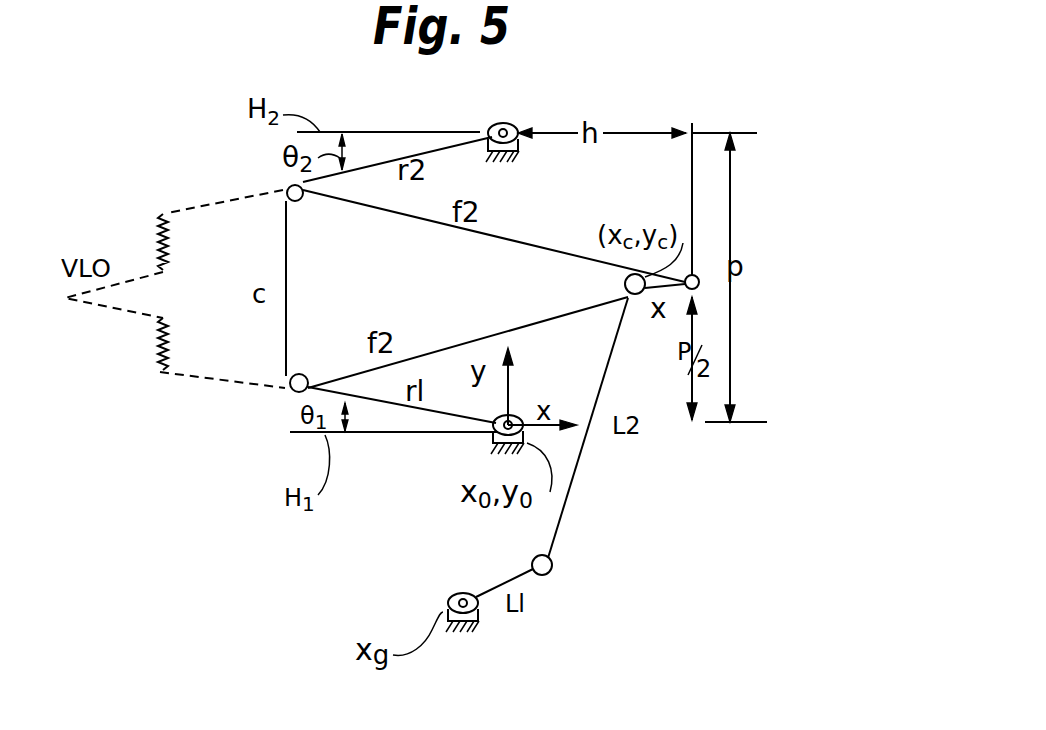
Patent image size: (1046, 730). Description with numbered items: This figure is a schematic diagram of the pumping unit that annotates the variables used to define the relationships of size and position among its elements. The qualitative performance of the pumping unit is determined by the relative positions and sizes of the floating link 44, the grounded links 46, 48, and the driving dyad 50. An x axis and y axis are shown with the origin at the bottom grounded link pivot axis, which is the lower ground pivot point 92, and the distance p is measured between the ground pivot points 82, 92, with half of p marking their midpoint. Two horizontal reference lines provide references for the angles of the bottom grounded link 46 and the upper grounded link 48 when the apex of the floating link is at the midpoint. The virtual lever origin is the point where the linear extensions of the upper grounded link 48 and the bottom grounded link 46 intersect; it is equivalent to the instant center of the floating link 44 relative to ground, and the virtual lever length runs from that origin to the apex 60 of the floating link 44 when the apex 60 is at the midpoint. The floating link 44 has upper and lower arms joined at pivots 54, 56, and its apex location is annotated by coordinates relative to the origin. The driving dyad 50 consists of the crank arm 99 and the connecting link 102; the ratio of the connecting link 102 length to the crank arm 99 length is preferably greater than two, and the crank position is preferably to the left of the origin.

The floating link 44 is at (560, 248).
The bottom grounded link 46 is at (291, 395).
The upper grounded link 48 is at (368, 168).
The driving dyad 50 is at (550, 577).
The lower follower link 54 is at (481, 342).
The upper follower link 56 is at (522, 240).
The apex 60 is at (698, 275).
The ground pivot point 82 is at (503, 123).
The ground pivot point 92 is at (490, 433).
The crank arm 99 is at (500, 585).
The connecting link 102 is at (565, 504).